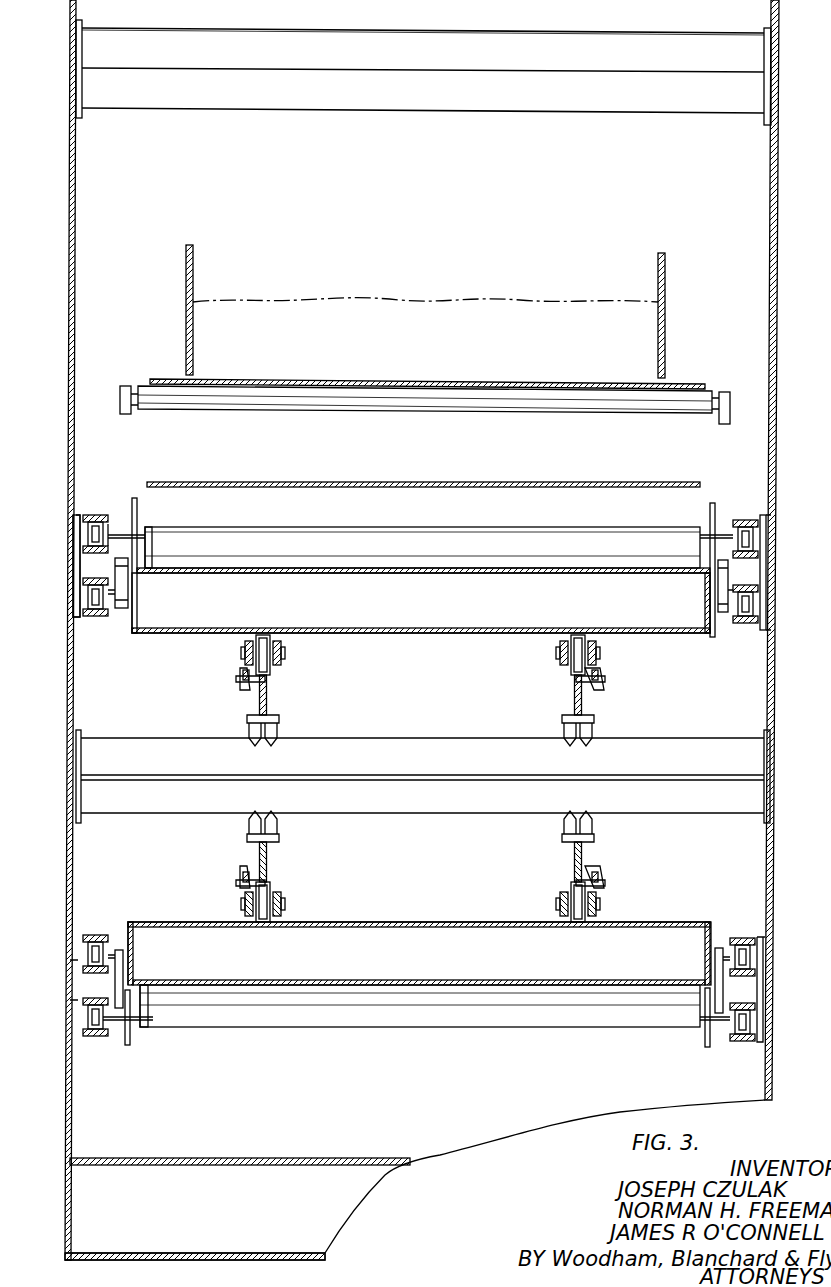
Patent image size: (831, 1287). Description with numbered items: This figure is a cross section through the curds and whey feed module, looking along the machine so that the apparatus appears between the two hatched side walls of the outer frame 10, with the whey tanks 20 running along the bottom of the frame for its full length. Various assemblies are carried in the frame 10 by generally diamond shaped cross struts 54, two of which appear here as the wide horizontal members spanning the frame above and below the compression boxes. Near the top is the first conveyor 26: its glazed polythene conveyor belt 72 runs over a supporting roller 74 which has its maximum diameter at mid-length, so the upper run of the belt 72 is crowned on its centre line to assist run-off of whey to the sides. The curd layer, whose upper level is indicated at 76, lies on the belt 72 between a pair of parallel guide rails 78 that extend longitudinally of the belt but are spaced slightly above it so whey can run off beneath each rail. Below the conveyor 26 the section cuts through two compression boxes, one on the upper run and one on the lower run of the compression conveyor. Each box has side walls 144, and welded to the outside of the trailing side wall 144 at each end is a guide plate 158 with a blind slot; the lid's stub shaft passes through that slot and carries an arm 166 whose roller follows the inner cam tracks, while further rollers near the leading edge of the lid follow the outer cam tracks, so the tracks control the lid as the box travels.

The outer frame 10 is at (78, 158).
The whey tank 20 is at (231, 1158).
The conveyor 26 is at (435, 389).
The cross strut 54 is at (262, 78).
The conveyor belt 72 is at (276, 387).
The roller 74 is at (237, 402).
The upper level of curd layer 76 is at (358, 312).
The guide rail 78 is at (193, 285).
The side wall 144 is at (705, 611).
The guide plate 158 is at (710, 521).
The arm 166 is at (128, 582).